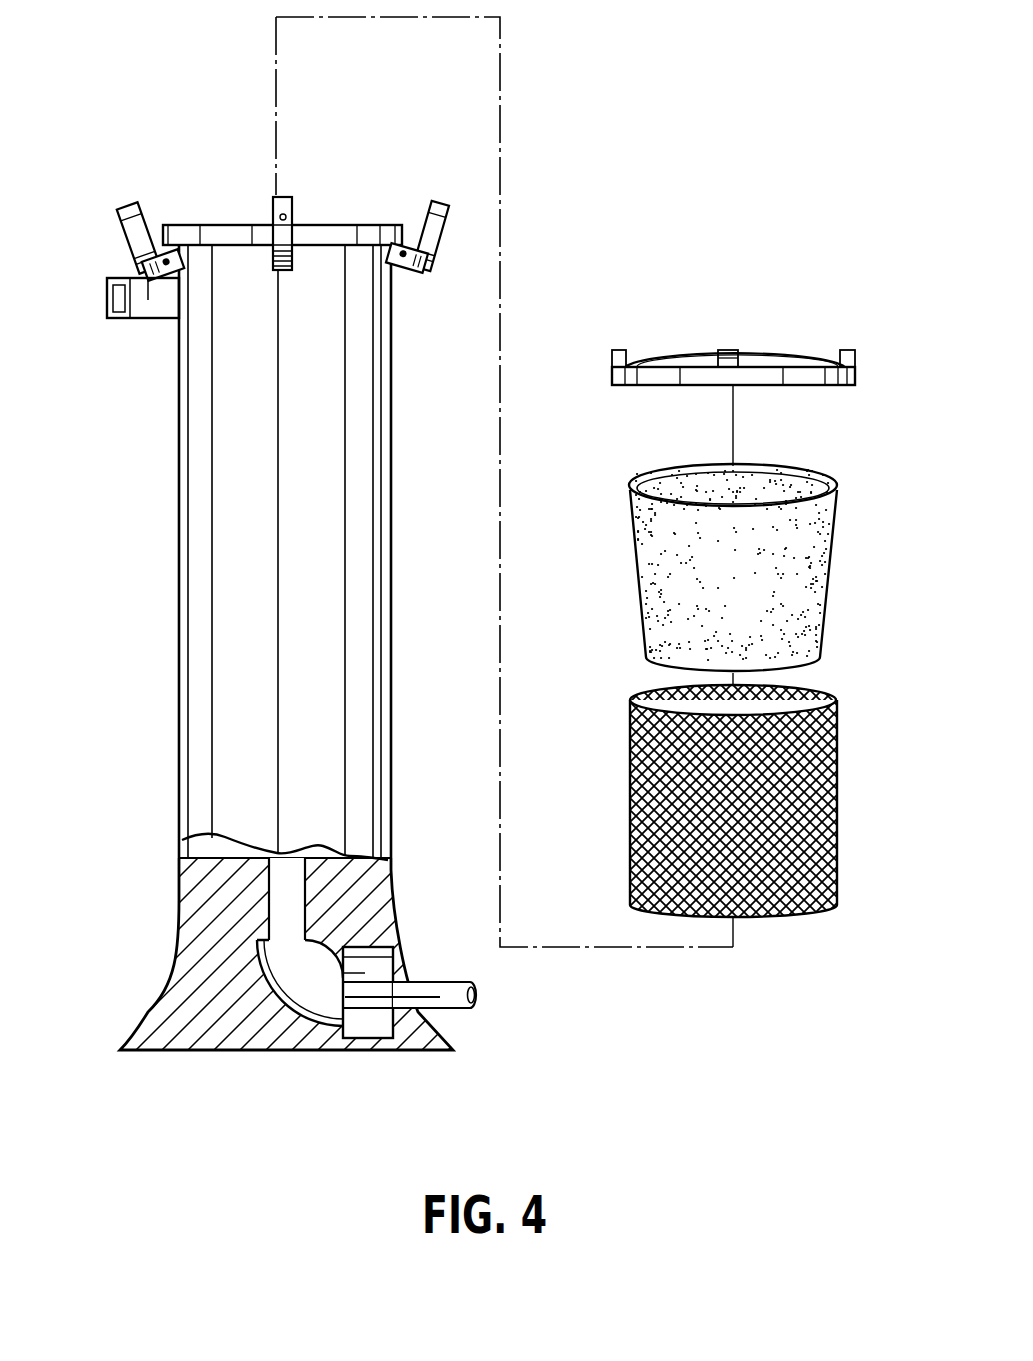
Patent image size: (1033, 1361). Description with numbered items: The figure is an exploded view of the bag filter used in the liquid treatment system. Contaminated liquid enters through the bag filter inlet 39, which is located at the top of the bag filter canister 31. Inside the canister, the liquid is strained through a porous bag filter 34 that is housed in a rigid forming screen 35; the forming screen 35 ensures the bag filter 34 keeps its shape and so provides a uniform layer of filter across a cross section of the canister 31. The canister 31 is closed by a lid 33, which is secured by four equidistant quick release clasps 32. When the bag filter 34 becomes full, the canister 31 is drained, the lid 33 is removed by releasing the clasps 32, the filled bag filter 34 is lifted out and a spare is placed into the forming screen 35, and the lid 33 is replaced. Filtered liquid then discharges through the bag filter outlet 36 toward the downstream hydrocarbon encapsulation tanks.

The bag filter canister 31 is at (360, 648).
The quick release clasps 32 is at (140, 220).
The lid 33 is at (748, 350).
The bag filter 34 is at (823, 620).
The forming screen 35 is at (837, 836).
The bag filter outlet 36 is at (466, 1010).
The bag filter inlet 39 is at (110, 278).